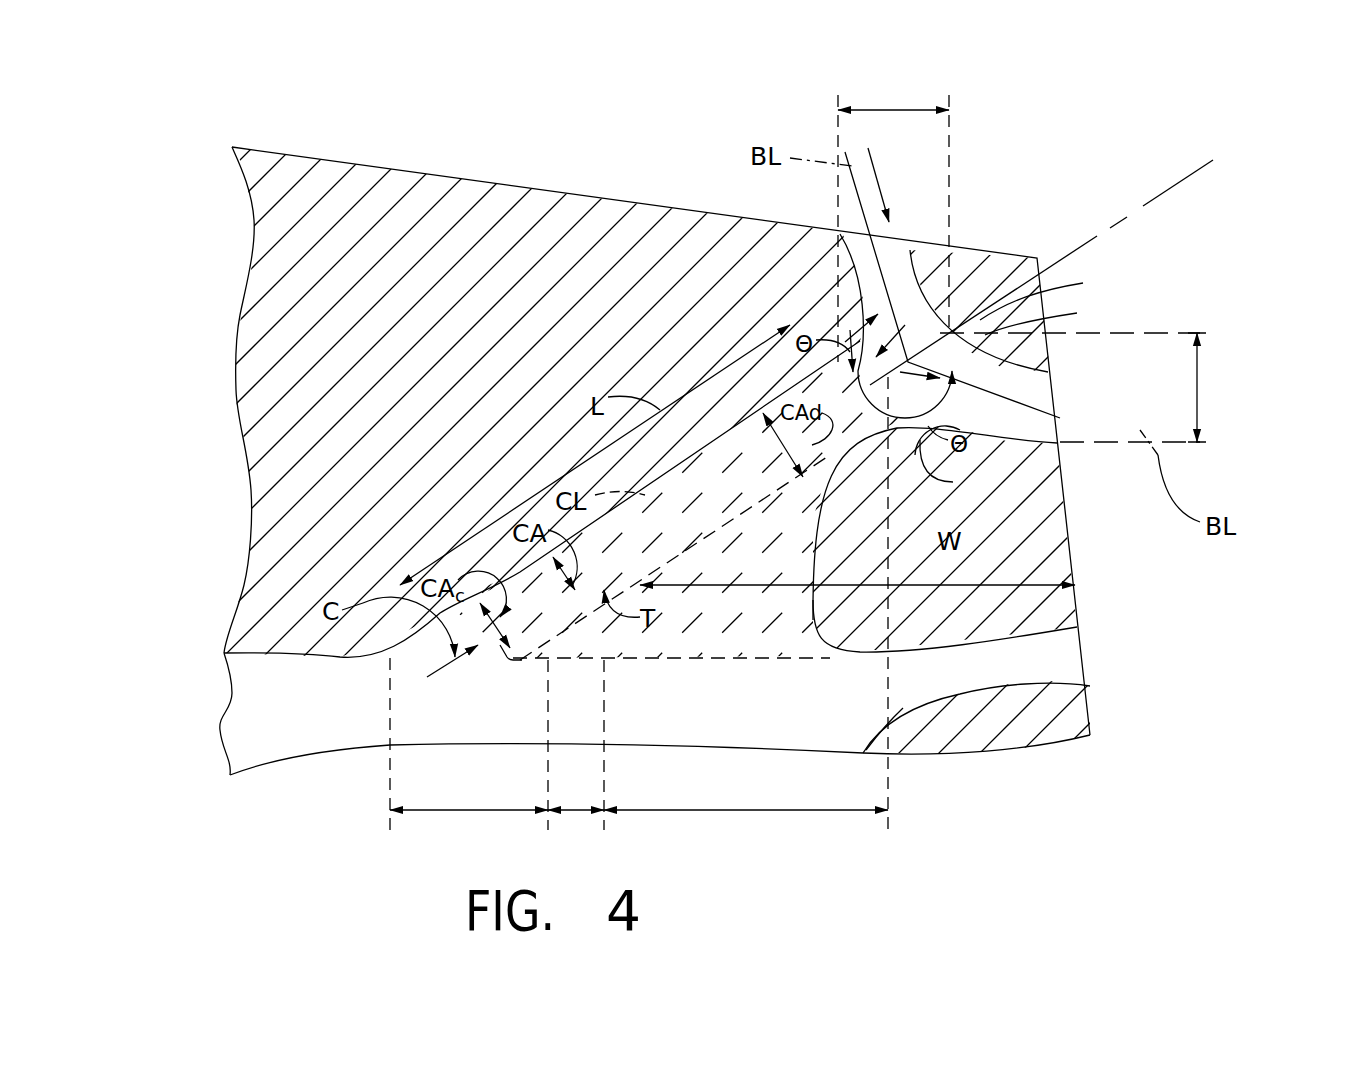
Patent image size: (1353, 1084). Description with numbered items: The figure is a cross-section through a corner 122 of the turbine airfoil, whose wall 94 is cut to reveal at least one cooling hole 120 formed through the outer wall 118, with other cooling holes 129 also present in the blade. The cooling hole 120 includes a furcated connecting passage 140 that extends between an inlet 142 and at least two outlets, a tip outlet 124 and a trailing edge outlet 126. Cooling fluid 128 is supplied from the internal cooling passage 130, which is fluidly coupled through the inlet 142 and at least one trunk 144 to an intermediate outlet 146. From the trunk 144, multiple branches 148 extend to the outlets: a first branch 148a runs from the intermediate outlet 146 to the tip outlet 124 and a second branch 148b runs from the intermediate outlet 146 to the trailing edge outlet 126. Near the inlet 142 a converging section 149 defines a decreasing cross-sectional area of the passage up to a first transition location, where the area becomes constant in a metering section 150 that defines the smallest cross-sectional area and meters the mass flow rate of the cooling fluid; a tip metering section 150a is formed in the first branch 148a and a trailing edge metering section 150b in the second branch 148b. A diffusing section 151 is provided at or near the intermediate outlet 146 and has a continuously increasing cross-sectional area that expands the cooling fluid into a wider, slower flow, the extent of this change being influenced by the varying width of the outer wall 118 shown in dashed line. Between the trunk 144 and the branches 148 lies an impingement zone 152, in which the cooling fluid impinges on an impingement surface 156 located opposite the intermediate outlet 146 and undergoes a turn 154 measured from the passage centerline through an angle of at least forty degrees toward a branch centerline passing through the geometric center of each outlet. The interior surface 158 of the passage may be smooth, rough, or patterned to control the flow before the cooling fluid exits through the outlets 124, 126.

The airfoil wall 94 is at (468, 175).
The outer wall 118 is at (980, 622).
The cooling hole 120 is at (1057, 319).
The corner 122 is at (1042, 252).
The tip outlet 124 is at (868, 148).
The trailing edge outlet 126 is at (1040, 400).
The cooling fluid flow 128 is at (268, 740).
The other cooling holes 129 is at (1027, 662).
The cooling passage 130 is at (340, 727).
The furcated connecting passage 140 is at (717, 470).
The inlet 142 is at (490, 662).
The trunk 144 is at (657, 547).
The intermediate outlet 146 is at (945, 268).
The branches 148 is at (863, 285).
The first branch 148a is at (866, 242).
The second branch 148b is at (1026, 425).
The converging section 149 is at (455, 812).
The metering section 150 is at (578, 812).
The tip metering section 150a is at (878, 108).
The trailing edge metering section 150b is at (1198, 388).
The diffusing section 151 is at (688, 812).
The impingement zone 152 is at (864, 603).
The turn 154 is at (915, 455).
The impingement surface 156 is at (1059, 293).
The interior surface 158 is at (830, 380).